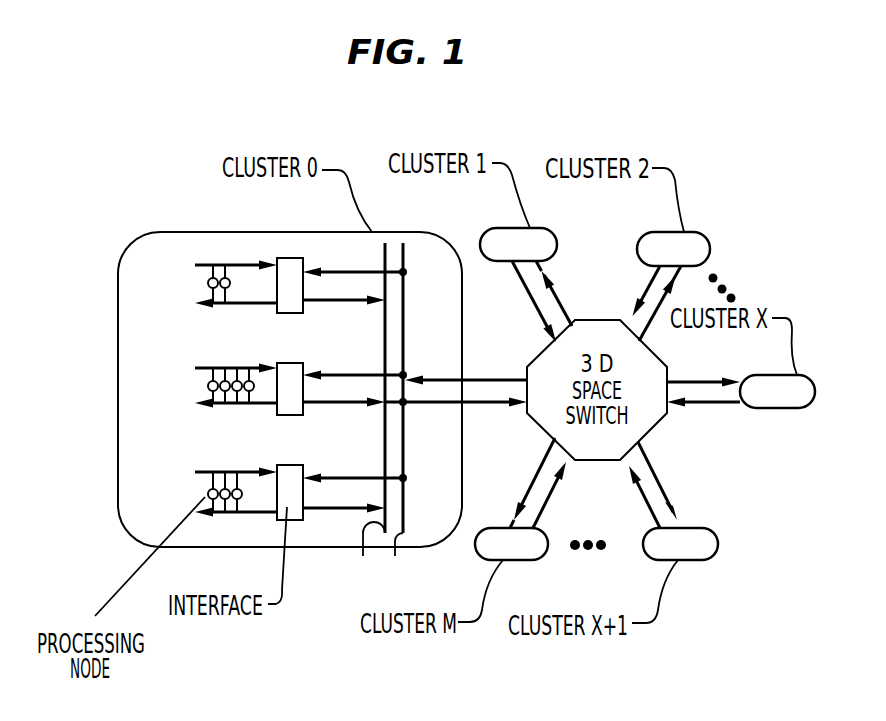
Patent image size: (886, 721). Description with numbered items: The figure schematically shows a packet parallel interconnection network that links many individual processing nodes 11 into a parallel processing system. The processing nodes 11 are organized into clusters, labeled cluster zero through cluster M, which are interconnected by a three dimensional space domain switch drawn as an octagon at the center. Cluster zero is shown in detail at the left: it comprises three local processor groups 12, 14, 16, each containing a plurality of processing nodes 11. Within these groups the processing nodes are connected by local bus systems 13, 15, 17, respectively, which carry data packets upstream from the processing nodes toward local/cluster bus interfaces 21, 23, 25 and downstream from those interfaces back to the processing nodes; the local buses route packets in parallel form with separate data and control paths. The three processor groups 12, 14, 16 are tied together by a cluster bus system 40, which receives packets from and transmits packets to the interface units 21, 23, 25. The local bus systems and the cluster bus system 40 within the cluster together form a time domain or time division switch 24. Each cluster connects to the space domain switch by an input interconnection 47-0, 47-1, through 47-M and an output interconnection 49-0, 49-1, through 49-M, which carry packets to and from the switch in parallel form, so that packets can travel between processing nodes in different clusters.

The processing node 11 is at (208, 281).
The local processor group 12 is at (233, 292).
The local bus system 13 is at (255, 264).
The local processor group 14 is at (233, 388).
The local bus system 15 is at (260, 404).
The local processor group 16 is at (238, 488).
The local bus system 17 is at (260, 513).
The local/cluster bus interface 21 is at (290, 313).
The local/cluster bus interface 23 is at (277, 370).
The time domain switch 24 is at (150, 334).
The local/cluster bus interface 25 is at (292, 465).
The cluster bus system 40 is at (391, 545).
The input interconnection 47-0 is at (487, 404).
The output interconnection 49-0 is at (519, 350).
The input interconnection 47-1 is at (542, 306).
The output interconnection 49-1 is at (547, 290).
The input interconnection 47-M is at (548, 500).
The output interconnection 49-M is at (535, 480).